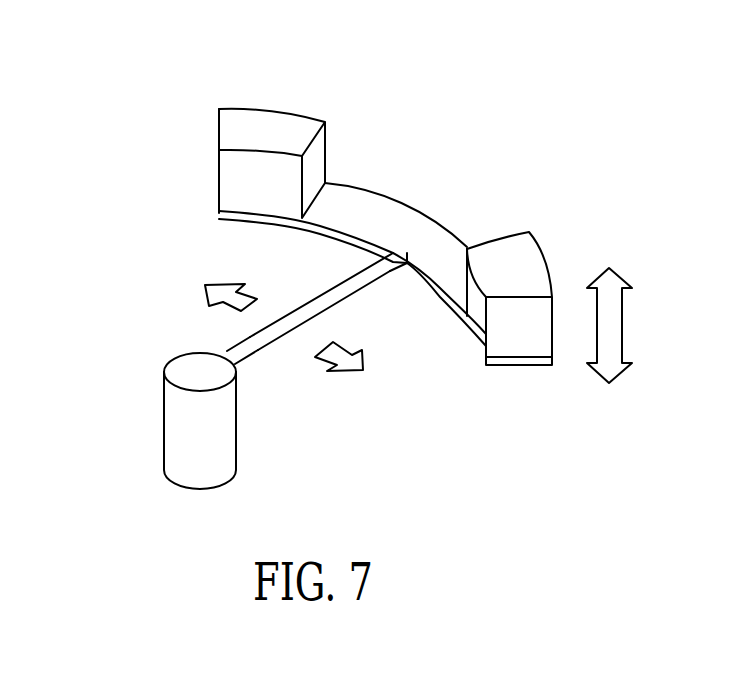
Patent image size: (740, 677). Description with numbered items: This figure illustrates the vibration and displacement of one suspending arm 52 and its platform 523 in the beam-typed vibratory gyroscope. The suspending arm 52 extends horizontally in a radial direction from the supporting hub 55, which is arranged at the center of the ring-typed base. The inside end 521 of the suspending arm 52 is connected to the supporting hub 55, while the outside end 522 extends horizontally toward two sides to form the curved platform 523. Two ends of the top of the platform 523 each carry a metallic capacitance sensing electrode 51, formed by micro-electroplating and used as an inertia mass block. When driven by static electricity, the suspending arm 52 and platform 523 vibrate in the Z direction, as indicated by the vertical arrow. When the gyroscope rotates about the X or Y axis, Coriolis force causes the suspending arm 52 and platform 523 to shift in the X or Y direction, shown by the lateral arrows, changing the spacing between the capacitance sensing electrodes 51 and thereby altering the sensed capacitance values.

The capacitance sensing electrode 51 is at (268, 118).
The platform 523 is at (420, 217).
The suspending arm 52 is at (350, 283).
The inside end 521 is at (230, 353).
The outside end 522 is at (403, 264).
The supporting hub 55 is at (170, 415).